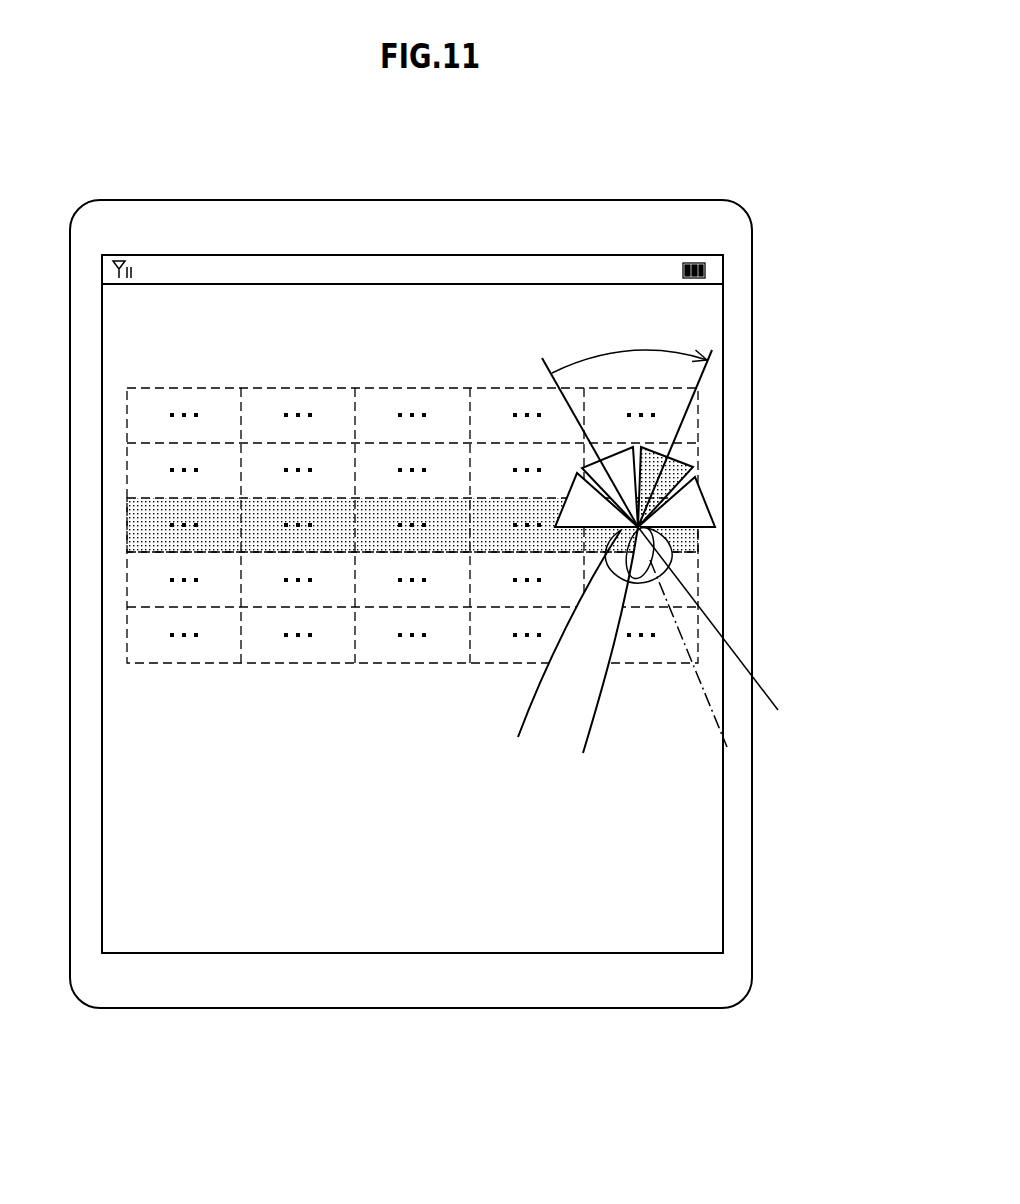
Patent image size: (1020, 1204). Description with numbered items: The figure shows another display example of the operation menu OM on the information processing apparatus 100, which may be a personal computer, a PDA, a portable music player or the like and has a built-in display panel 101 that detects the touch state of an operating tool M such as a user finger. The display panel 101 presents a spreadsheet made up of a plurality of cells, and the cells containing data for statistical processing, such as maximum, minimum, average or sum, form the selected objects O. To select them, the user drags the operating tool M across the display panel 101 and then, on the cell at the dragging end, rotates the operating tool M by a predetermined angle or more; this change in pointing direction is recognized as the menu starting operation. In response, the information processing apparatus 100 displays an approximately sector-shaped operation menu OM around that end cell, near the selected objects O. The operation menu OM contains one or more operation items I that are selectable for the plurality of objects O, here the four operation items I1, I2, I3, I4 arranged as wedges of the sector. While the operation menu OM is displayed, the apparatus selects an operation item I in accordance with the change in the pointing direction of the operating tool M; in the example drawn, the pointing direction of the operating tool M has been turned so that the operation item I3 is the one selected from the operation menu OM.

The information processing apparatus 100 is at (617, 198).
The display panel 101 is at (329, 255).
The object O is at (693, 535).
The operation menu OM is at (671, 438).
The operation item I is at (712, 502).
The operation item I1 is at (596, 500).
The operation item I2 is at (610, 487).
The operation item I3 is at (665, 487).
The operation item I4 is at (676, 502).
The operating tool M is at (593, 735).